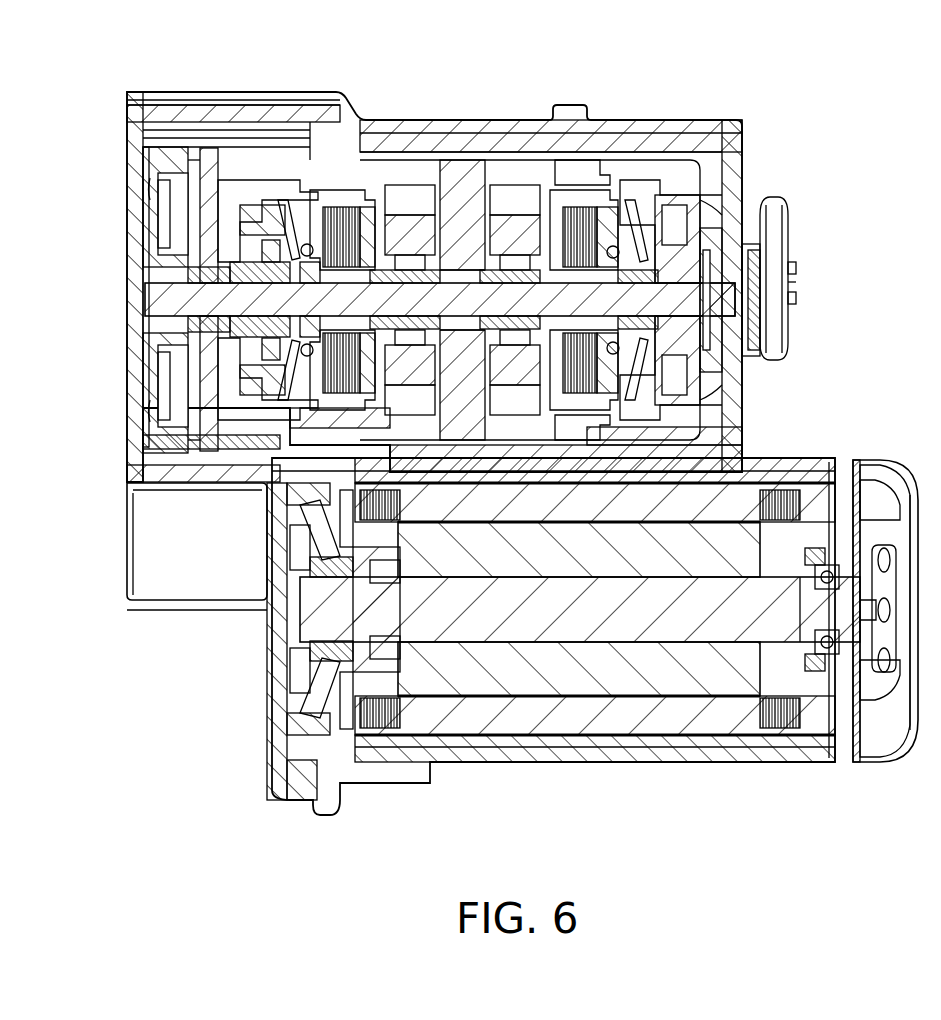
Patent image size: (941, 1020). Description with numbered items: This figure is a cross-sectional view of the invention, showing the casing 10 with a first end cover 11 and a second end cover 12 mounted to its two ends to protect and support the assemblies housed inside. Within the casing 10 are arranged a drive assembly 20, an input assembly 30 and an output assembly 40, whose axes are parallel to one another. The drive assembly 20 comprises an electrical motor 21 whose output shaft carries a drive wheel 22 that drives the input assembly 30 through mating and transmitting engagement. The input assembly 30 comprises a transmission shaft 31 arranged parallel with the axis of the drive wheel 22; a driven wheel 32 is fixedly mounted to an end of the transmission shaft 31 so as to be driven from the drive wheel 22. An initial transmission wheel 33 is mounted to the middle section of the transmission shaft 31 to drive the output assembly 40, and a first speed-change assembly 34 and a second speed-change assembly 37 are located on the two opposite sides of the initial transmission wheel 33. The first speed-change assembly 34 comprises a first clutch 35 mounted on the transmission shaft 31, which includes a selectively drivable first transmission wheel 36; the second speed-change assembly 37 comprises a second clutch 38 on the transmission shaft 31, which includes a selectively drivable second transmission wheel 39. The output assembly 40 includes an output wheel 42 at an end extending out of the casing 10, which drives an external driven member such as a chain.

The casing 10 is at (535, 118).
The first end cover 11 is at (192, 106).
The second end cover 12 is at (735, 140).
The drive assembly 20 is at (595, 676).
The electrical motor 21 is at (672, 725).
The drive wheel 22 is at (312, 724).
The input assembly 30 is at (445, 190).
The transmission shaft 31 is at (700, 252).
The driven wheel 32 is at (160, 160).
The initial transmission wheel 33 is at (465, 230).
The first speed-change assembly 34 is at (343, 183).
The first clutch 35 is at (350, 196).
The first transmission wheel 36 is at (410, 215).
The second speed-change assembly 37 is at (570, 168).
The second clutch 38 is at (625, 178).
The second transmission wheel 39 is at (512, 215).
The output assembly 40 is at (825, 253).
The output wheel 42 is at (790, 325).